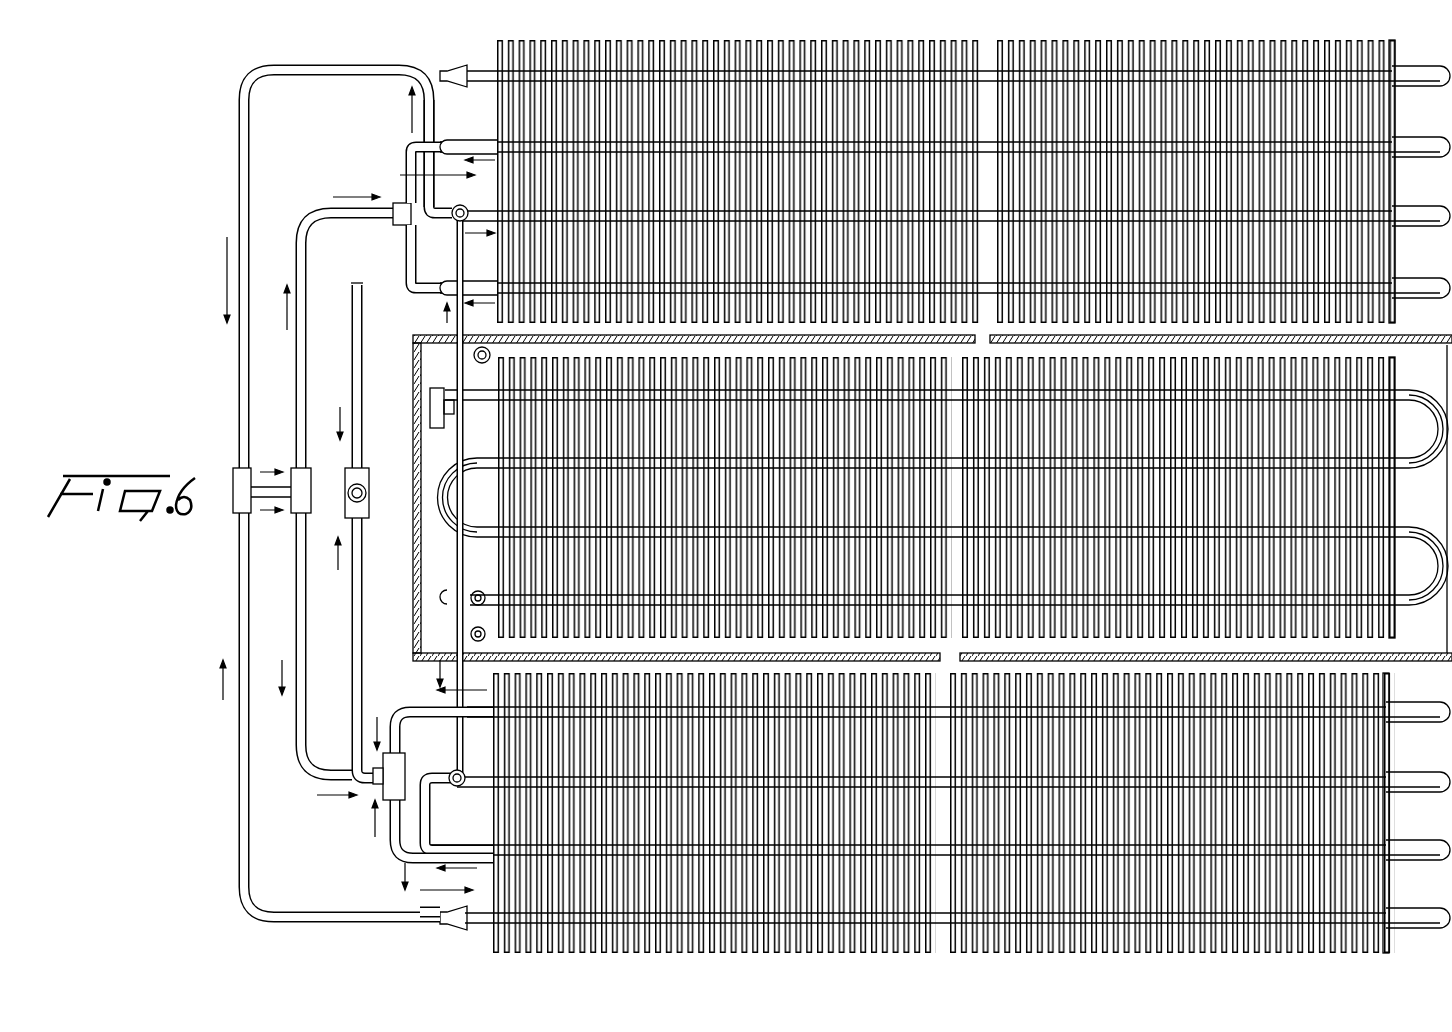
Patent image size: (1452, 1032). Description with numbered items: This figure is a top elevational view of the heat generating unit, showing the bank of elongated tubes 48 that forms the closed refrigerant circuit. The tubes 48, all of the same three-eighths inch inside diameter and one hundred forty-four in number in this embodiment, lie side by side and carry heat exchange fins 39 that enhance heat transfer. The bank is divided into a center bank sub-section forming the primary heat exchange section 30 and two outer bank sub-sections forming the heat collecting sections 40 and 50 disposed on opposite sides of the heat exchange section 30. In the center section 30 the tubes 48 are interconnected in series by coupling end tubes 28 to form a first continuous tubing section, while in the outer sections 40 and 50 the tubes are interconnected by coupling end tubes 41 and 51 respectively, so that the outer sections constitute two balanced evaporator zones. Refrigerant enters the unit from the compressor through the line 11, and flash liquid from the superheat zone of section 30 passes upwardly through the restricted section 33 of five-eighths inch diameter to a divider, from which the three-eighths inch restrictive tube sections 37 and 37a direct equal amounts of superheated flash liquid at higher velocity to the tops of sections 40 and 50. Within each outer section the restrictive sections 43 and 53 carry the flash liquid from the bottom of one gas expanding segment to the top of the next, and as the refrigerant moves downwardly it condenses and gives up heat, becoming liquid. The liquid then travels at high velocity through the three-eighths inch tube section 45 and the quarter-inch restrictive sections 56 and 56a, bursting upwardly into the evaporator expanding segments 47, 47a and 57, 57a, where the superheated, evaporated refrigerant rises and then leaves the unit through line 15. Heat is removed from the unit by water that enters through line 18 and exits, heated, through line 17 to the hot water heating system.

The line 11 is at (417, 337).
The line 15 is at (353, 497).
The line 17 is at (475, 588).
The line 18 is at (473, 641).
The coupling end tubes 28 is at (442, 500).
The primary heat exchange section 30 is at (490, 510).
The restricted section 33 is at (433, 423).
The restrictive tube section 37 is at (453, 750).
The restrictive tube section 37a is at (393, 213).
The heat exchange fins 39 is at (1392, 200).
The heat collecting section 40 is at (410, 898).
The coupling end tubes 41 is at (447, 921).
The restrictive section 43 is at (420, 818).
The tube section 45 is at (237, 812).
The evaporator expanding segment 47 is at (420, 840).
The evaporator expanding segment 47a is at (393, 718).
The elongated tubes 48 is at (1280, 222).
The heat collecting section 50 is at (470, 175).
The coupling end tubes 51 is at (448, 76).
The restrictive section 53 is at (423, 93).
The restrictive section 56 is at (405, 147).
The restrictive section 56a is at (402, 284).
The evaporator expanding segment 57 is at (475, 140).
The evaporator expanding segment 57a is at (480, 278).